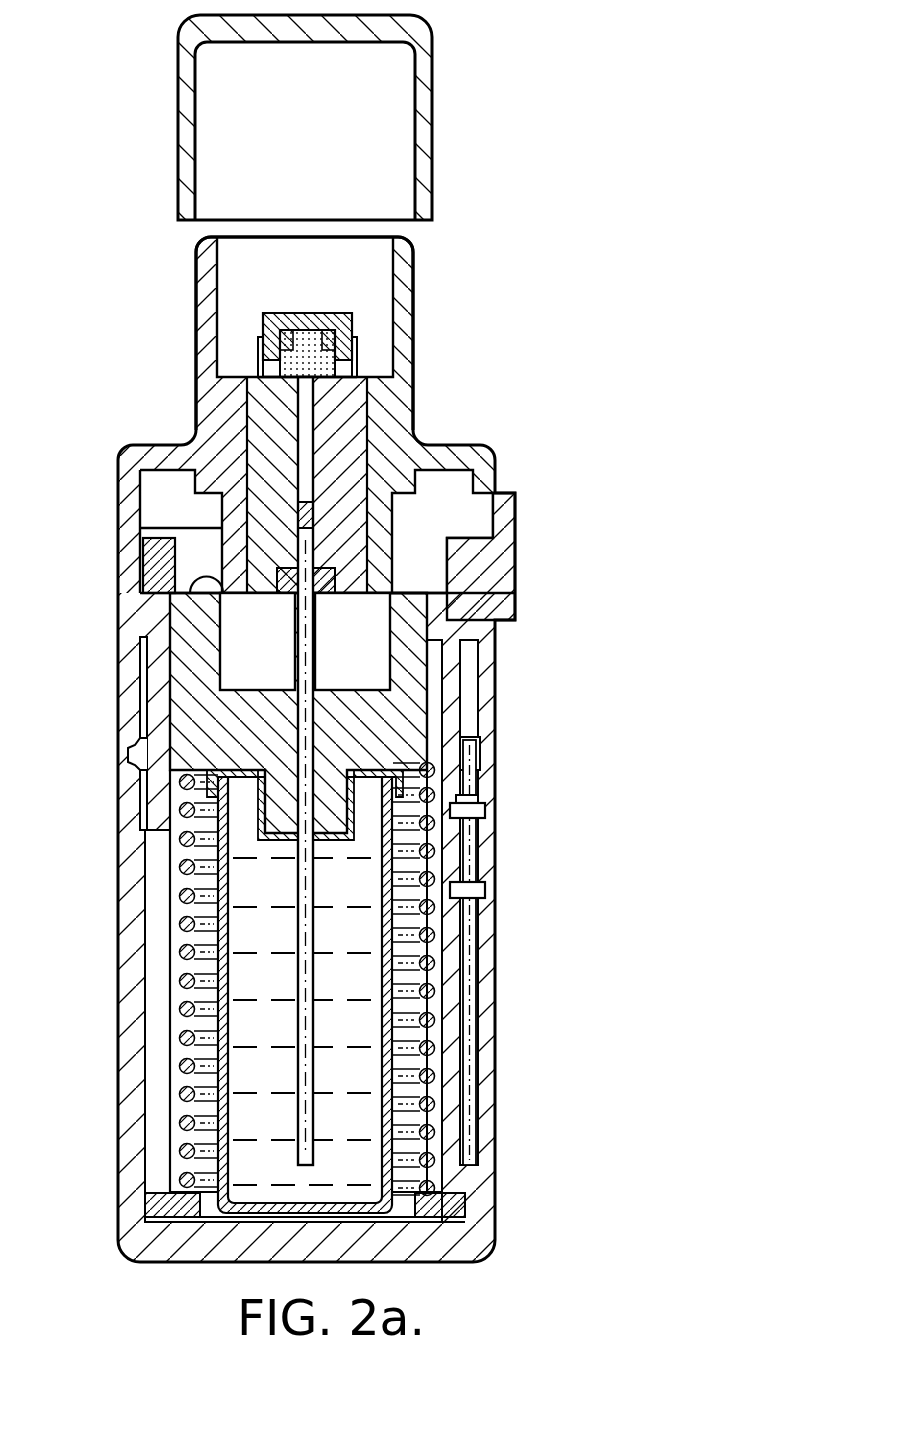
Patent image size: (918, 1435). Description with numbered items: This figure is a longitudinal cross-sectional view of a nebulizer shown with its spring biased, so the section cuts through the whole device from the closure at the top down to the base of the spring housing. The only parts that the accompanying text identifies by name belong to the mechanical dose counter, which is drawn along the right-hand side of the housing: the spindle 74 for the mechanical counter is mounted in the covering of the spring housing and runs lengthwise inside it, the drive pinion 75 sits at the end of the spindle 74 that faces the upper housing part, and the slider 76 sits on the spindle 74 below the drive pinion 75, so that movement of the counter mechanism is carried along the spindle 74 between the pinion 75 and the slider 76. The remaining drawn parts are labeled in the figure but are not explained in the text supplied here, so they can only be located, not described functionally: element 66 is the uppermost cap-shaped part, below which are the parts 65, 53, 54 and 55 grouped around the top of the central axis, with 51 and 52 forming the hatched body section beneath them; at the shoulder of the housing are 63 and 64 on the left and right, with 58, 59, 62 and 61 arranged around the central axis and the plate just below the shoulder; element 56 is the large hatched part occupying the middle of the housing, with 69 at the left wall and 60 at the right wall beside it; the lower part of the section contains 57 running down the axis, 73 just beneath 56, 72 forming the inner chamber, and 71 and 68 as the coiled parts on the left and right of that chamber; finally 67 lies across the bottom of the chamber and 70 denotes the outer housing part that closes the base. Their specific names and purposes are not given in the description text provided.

The body 51 is at (388, 392).
The central guide block 52 is at (350, 455).
The cap nut 53 is at (350, 322).
The resilient element 54 is at (298, 330).
The flange washer 55 is at (262, 352).
The piston 56 is at (200, 693).
The piston rod 57 is at (298, 930).
The upper seal 58 is at (300, 515).
The lower seal 59 is at (335, 578).
The sleeve wall 60 is at (428, 748).
The vent passage 61 is at (213, 595).
The left insert block 62 is at (158, 570).
The left recess 63 is at (158, 503).
The right recess block 64 is at (500, 512).
The upper cup 65 is at (410, 258).
The cap 66 is at (422, 97).
The bottom ring 67 is at (452, 1201).
The right spring 68 is at (422, 1085).
The detent knob 69 is at (132, 742).
The housing 70 is at (425, 1248).
The left spring 71 is at (182, 905).
The cylinder 72 is at (258, 1057).
The seal sheet 73 is at (372, 792).
The spindle 74 is at (470, 855).
The drive pinion 75 is at (488, 810).
The slider 76 is at (480, 890).